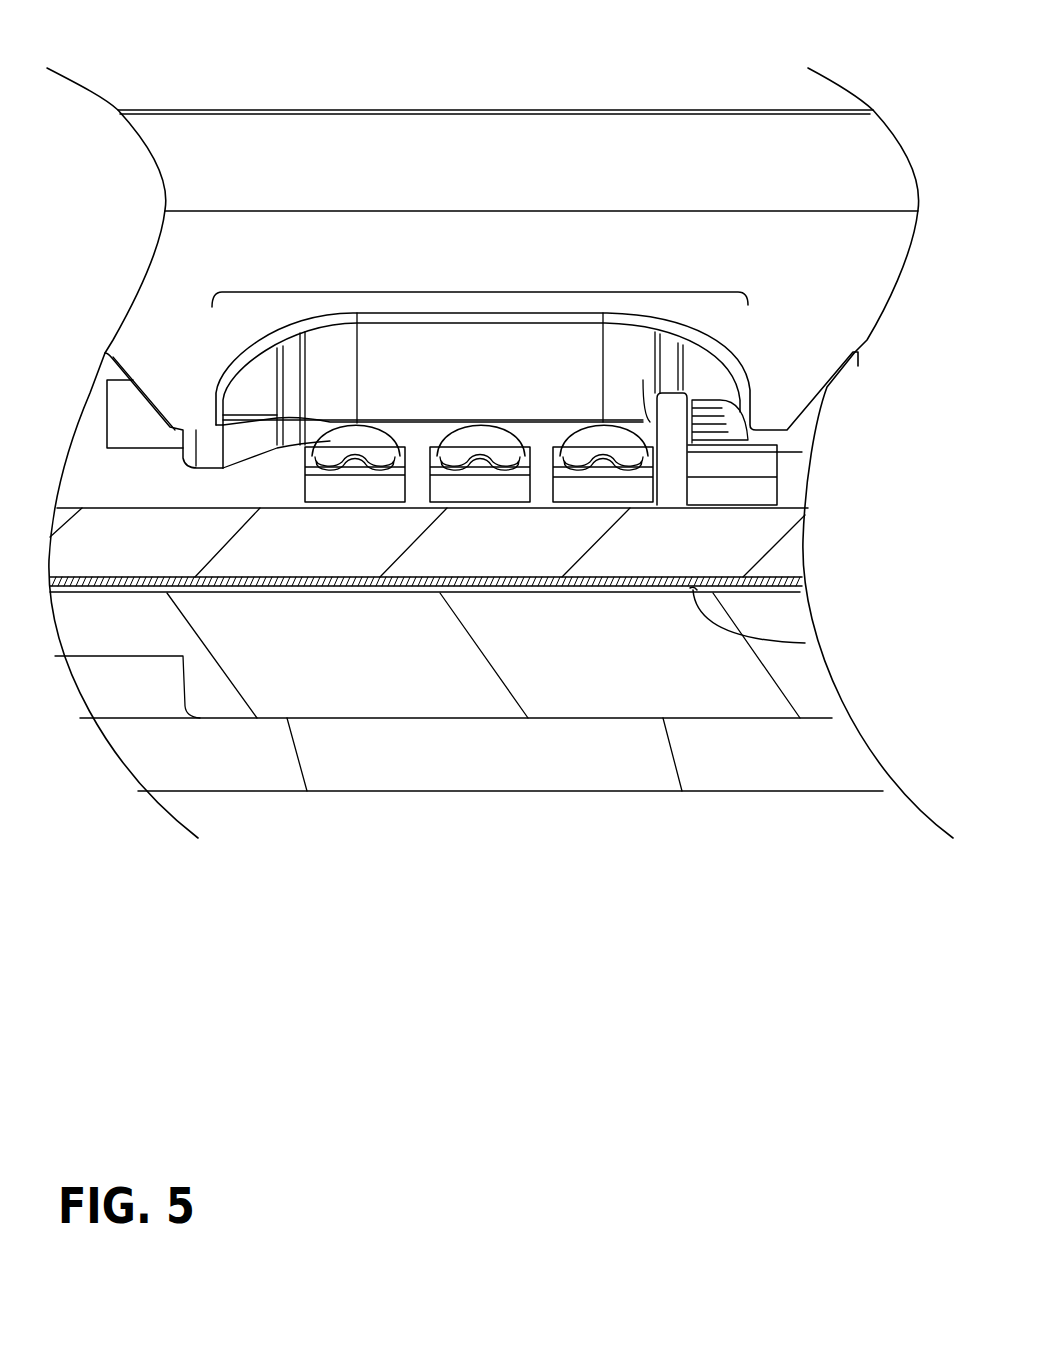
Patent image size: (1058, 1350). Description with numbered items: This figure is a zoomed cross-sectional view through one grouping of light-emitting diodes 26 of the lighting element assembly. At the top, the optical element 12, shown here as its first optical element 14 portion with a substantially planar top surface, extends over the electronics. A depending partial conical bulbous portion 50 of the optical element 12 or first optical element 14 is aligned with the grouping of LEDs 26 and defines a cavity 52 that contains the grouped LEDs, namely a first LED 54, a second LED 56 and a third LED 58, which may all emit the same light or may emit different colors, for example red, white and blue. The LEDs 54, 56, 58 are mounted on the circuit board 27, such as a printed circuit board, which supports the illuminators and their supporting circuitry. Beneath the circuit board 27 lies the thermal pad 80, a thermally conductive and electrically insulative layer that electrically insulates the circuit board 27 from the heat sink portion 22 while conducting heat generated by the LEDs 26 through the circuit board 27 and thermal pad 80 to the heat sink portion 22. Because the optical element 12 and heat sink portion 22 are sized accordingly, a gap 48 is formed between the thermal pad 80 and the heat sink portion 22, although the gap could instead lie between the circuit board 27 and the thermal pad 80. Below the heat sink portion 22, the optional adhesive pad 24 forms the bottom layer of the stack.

The optical element 12 is at (202, 86).
The first optical element 14 is at (242, 252).
The heat sink portion 22 is at (622, 672).
The adhesive pad 24 is at (745, 755).
The light-emitting diodes 26 is at (593, 417).
The circuit board 27 is at (530, 558).
The gap 48 is at (805, 643).
The bulbous portion 50 is at (483, 293).
The cavity 52 is at (521, 378).
The first LED 54 is at (357, 492).
The second LED 56 is at (480, 492).
The third LED 58 is at (607, 484).
The thermal pad 80 is at (412, 586).